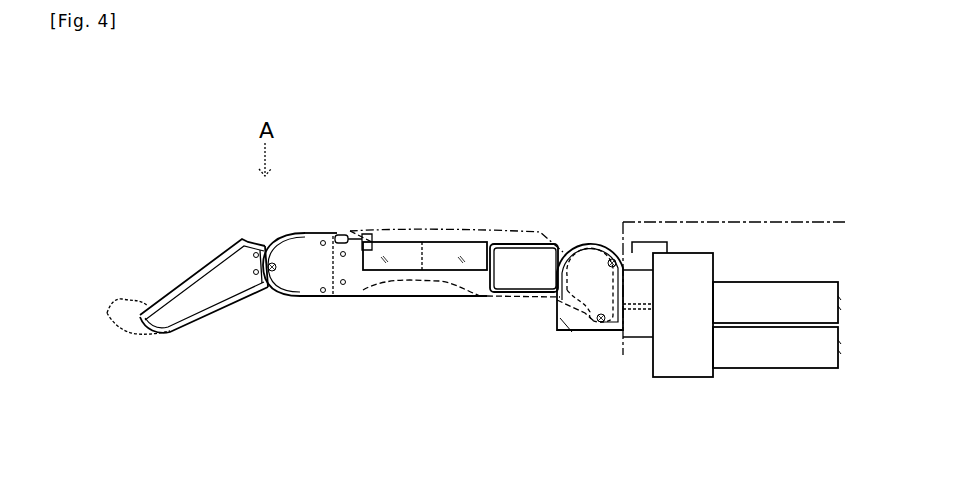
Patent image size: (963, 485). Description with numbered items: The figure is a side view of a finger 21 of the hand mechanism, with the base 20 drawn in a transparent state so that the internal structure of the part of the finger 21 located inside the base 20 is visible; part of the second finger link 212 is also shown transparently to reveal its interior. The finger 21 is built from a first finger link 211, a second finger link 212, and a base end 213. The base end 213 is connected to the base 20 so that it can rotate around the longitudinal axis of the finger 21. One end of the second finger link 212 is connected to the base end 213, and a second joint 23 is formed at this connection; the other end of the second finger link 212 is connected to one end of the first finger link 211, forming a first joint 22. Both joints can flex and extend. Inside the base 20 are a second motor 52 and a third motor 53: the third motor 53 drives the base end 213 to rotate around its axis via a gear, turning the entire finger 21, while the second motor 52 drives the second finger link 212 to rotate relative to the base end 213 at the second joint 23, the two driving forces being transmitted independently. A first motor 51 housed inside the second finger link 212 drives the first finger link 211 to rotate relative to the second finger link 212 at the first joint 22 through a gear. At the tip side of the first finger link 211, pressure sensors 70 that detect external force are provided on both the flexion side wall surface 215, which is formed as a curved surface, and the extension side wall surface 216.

The base 20 is at (744, 221).
The finger 21 is at (363, 150).
The first joint 22 is at (295, 257).
The second joint 23 is at (590, 250).
The first motor 51 is at (442, 261).
The second motor 52 is at (797, 298).
The third motor 53 is at (797, 352).
The pressure sensor 70 is at (107, 313).
The first finger link 211 is at (168, 315).
The second finger link 212 is at (427, 281).
The base end 213 is at (585, 337).
The flexion side wall surface 215 is at (213, 318).
The extension side wall surface 216 is at (163, 293).